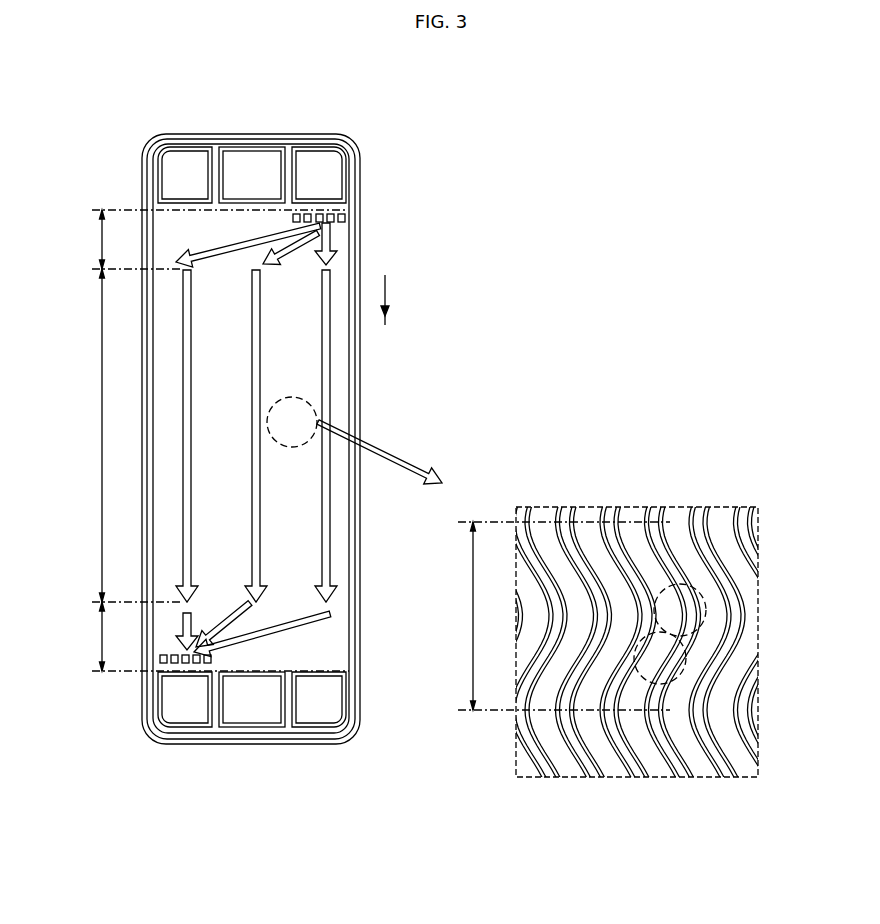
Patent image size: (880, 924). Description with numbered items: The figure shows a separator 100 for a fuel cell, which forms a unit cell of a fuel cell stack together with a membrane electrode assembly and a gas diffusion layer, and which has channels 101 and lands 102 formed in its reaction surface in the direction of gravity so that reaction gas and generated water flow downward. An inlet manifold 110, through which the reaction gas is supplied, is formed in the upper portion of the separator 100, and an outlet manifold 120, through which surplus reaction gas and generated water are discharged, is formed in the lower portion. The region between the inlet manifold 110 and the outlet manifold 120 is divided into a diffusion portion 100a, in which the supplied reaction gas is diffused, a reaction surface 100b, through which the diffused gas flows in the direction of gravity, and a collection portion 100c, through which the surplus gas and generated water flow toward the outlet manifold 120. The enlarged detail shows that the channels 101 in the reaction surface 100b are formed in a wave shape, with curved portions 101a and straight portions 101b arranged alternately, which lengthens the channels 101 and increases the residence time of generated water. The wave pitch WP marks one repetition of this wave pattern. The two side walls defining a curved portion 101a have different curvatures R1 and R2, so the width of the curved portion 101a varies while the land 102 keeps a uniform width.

The separator 100 is at (394, 151).
The inlet manifold 110 is at (318, 165).
The outlet manifold 120 is at (183, 702).
The diffusion portion 100a is at (191, 239).
The reaction surface 100b is at (109, 435).
The collection portion 100c is at (192, 636).
The channel 101 is at (718, 517).
The land 102 is at (608, 513).
The curved portion 101a is at (700, 602).
The straight portion 101b is at (680, 657).
The wave pitch WP is at (549, 616).
The first curvature R1 is at (548, 722).
The second curvature R2 is at (540, 730).